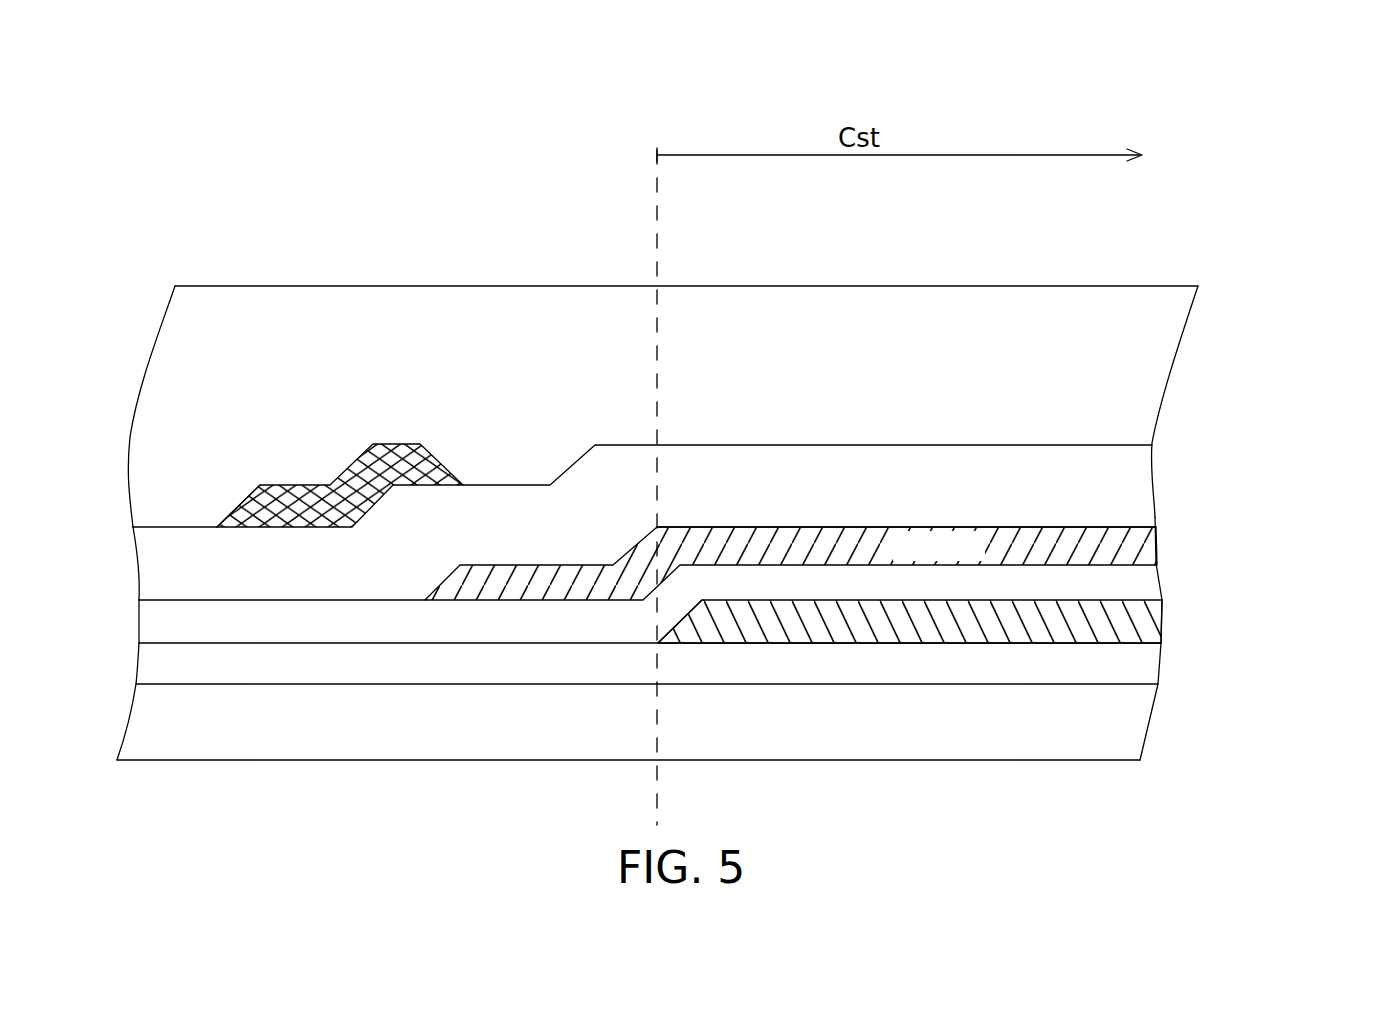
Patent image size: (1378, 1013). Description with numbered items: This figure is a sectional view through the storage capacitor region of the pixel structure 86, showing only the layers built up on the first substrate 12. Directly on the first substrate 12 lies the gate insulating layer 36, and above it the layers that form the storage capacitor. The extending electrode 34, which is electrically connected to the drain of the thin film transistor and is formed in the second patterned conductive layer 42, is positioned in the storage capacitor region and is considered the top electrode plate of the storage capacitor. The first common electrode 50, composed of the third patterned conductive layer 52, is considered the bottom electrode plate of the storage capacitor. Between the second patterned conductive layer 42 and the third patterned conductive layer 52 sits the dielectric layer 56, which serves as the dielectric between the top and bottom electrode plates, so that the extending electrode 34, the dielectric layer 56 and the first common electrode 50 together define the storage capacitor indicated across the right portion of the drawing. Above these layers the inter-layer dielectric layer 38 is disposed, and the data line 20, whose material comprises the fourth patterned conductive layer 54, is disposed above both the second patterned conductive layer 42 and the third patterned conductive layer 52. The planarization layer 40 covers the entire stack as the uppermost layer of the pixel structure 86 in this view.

The pixel structure 86 is at (1218, 112).
The planarization layer 40 is at (1150, 356).
The inter-layer dielectric (ILD) layer 38 is at (1145, 481).
The data line 20 is at (315, 500).
The fourth patterned conductive layer 54 is at (243, 503).
The first common electrode 50 is at (1147, 541).
The third patterned conductive layer 52 is at (1133, 527).
The dielectric layer 56 is at (1147, 590).
The extending electrode 34 is at (1147, 625).
The second patterned conductive layer 42 is at (700, 602).
The gate insulating layer 36 is at (1142, 672).
The first substrate 12 is at (1133, 730).